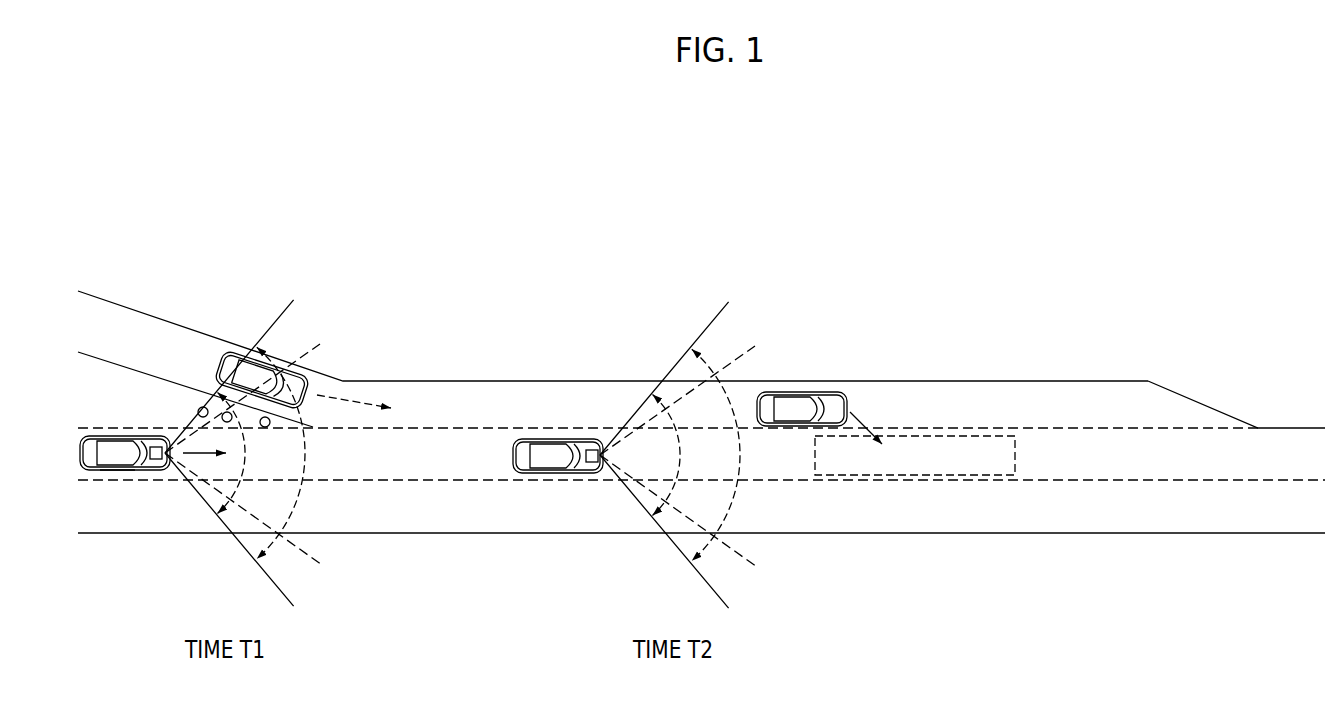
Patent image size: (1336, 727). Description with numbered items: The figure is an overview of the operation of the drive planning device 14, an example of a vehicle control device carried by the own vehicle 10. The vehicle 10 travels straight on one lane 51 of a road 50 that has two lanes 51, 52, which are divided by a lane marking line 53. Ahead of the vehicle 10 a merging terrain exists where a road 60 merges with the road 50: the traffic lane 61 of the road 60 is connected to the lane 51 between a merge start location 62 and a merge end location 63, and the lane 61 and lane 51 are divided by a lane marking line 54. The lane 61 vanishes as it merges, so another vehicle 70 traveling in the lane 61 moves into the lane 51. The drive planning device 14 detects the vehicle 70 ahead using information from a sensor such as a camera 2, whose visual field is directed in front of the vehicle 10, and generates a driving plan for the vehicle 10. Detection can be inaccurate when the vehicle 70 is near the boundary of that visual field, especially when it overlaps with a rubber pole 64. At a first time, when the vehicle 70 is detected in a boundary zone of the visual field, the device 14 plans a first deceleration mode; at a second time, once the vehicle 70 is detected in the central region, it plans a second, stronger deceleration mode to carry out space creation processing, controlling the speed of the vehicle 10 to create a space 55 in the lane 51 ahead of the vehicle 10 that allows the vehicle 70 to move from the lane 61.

The camera 2 is at (159, 446).
The vehicle 10 is at (102, 441).
The drive planning device 14 is at (114, 474).
The road 50 is at (1040, 536).
The lane 51 is at (1104, 469).
The lane 52 is at (1104, 523).
The lane marking line 53 is at (1178, 483).
The lane marking line 54 is at (1175, 430).
The space 55 is at (1018, 455).
The road 60 is at (492, 378).
The traffic lane 61 is at (1104, 418).
The merge start location 62 is at (309, 427).
The merge end location 63 is at (1259, 427).
The rubber pole 64 is at (199, 406).
The vehicle 70 is at (222, 360).